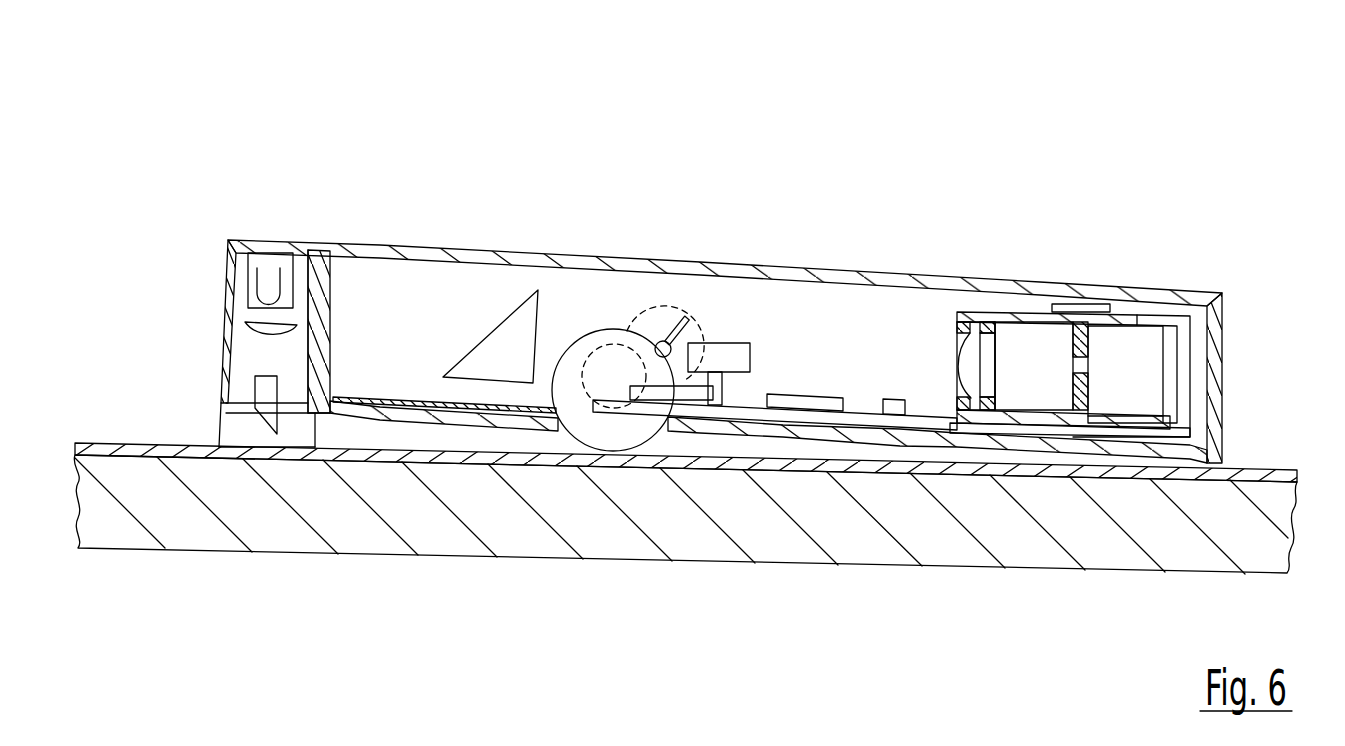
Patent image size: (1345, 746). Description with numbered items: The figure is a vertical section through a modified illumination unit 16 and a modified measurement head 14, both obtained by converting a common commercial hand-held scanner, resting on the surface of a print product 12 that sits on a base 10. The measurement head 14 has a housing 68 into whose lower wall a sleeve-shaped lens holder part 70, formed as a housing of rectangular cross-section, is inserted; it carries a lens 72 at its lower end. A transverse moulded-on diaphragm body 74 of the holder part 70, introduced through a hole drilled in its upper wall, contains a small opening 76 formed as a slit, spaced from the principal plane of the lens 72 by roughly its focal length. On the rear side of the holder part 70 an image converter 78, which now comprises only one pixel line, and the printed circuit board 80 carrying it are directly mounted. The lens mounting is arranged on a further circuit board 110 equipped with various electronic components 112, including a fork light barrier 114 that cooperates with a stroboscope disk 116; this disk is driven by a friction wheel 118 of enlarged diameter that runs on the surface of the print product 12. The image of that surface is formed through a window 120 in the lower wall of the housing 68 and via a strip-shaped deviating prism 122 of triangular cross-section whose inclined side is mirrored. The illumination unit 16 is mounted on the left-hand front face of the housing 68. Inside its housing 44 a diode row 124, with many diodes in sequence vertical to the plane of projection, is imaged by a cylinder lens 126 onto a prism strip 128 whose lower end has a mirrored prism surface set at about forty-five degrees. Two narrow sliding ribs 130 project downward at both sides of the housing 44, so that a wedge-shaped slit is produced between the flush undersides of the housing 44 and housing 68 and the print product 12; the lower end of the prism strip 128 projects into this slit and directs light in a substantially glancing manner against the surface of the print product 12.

The base plate 10 is at (417, 534).
The print product 12 is at (468, 432).
The measurement head 14 is at (836, 166).
The illumination unit 16 is at (276, 166).
The housing 44 is at (226, 348).
The housing 68 is at (850, 272).
The lens holder part 70 is at (1020, 316).
The lens 72 is at (968, 357).
The diaphragm body 74 is at (1090, 345).
The opening 76 is at (1108, 367).
The image converter 78 is at (1168, 360).
The printed circuit board 80 is at (1180, 398).
The circuit board 110 is at (887, 413).
The electronic components 112 is at (795, 404).
The fork light barrier 114 is at (718, 357).
The stroboscope disk 116 is at (662, 313).
The friction wheel 118 is at (600, 337).
The window 120 is at (523, 417).
The deviating prism 122 is at (500, 345).
The diode row 124 is at (270, 288).
The cylinder lens 126 is at (372, 352).
The prism strip 128 is at (254, 392).
The sliding ribs 130 is at (238, 432).